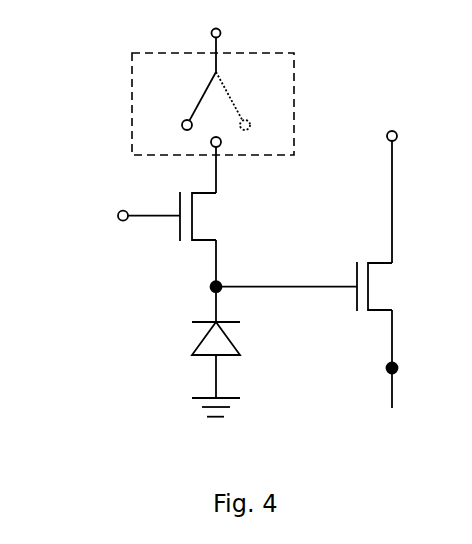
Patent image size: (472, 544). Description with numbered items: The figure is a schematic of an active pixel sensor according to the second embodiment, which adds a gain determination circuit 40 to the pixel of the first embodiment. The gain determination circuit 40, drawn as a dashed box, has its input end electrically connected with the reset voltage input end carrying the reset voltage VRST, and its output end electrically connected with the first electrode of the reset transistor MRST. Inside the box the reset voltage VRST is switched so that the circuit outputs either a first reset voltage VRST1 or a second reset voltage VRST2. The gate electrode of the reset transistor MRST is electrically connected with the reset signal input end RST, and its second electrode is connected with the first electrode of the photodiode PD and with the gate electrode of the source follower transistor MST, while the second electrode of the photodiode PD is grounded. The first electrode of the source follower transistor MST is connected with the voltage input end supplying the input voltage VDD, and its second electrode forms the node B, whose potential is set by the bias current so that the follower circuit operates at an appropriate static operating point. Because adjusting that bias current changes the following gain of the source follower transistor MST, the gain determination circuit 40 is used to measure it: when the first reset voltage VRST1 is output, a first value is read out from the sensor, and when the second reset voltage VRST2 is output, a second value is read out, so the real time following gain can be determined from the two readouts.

The gain determination circuit 40 is at (273, 83).
The reset voltage VRST is at (216, 40).
The first reset voltage VRST1 is at (177, 101).
The second reset voltage VRST2 is at (252, 101).
The reset transistor MRST is at (268, 257).
The reset signal input end RST is at (106, 213).
The photodiode PD is at (181, 369).
The input voltage VDD is at (394, 180).
The source follower transistor MST is at (408, 286).
The node B is at (374, 359).